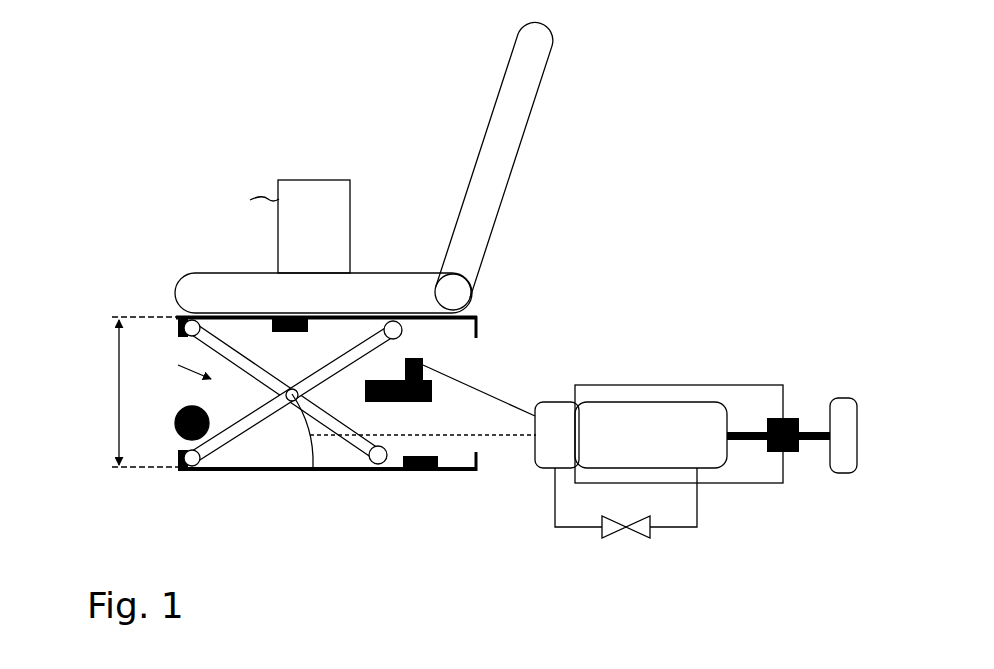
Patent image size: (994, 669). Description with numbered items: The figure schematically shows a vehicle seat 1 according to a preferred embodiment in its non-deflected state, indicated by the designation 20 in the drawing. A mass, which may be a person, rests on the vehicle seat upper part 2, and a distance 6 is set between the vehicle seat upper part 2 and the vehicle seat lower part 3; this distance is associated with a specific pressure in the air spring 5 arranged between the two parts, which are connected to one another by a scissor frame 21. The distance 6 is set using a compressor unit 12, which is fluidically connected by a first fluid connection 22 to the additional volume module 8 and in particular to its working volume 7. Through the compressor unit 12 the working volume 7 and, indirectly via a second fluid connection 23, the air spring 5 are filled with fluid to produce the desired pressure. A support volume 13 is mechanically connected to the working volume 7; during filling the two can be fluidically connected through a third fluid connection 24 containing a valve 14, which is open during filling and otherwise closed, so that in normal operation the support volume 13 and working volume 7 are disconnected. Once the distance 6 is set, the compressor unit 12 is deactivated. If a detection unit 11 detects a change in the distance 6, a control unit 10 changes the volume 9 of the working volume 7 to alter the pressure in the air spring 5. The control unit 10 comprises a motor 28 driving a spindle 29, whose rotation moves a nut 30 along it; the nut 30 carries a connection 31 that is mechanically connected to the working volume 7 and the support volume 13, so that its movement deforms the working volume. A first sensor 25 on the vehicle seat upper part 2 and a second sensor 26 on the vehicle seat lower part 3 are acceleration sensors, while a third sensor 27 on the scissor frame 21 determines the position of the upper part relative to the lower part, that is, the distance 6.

The vehicle seat 1 is at (124, 74).
The seat height adjustment device 20 is at (249, 69).
The detection unit 11 is at (96, 296).
The vehicle seat upper part 2 is at (180, 317).
The distance 6 is at (118, 373).
The scissor frame 21 is at (177, 362).
The third sensor 27 is at (175, 424).
The vehicle seat lower part 3 is at (191, 468).
The air spring 5 is at (284, 468).
The first sensor 25 is at (293, 333).
The second sensor 26 is at (420, 469).
The compressor unit 12 is at (433, 396).
The first fluid connection 22 is at (447, 377).
The second fluid connection 23 is at (505, 437).
The working volume 7 is at (552, 416).
The volume 9 is at (551, 400).
The additional volume module 8 is at (639, 307).
The support volume 13 is at (665, 412).
The connection 31 is at (741, 484).
The third fluid connection 24 is at (554, 510).
The valve 14 is at (638, 537).
The control unit 10 is at (832, 345).
The spindle 29 is at (812, 442).
The nut 30 is at (787, 420).
The motor 28 is at (857, 436).